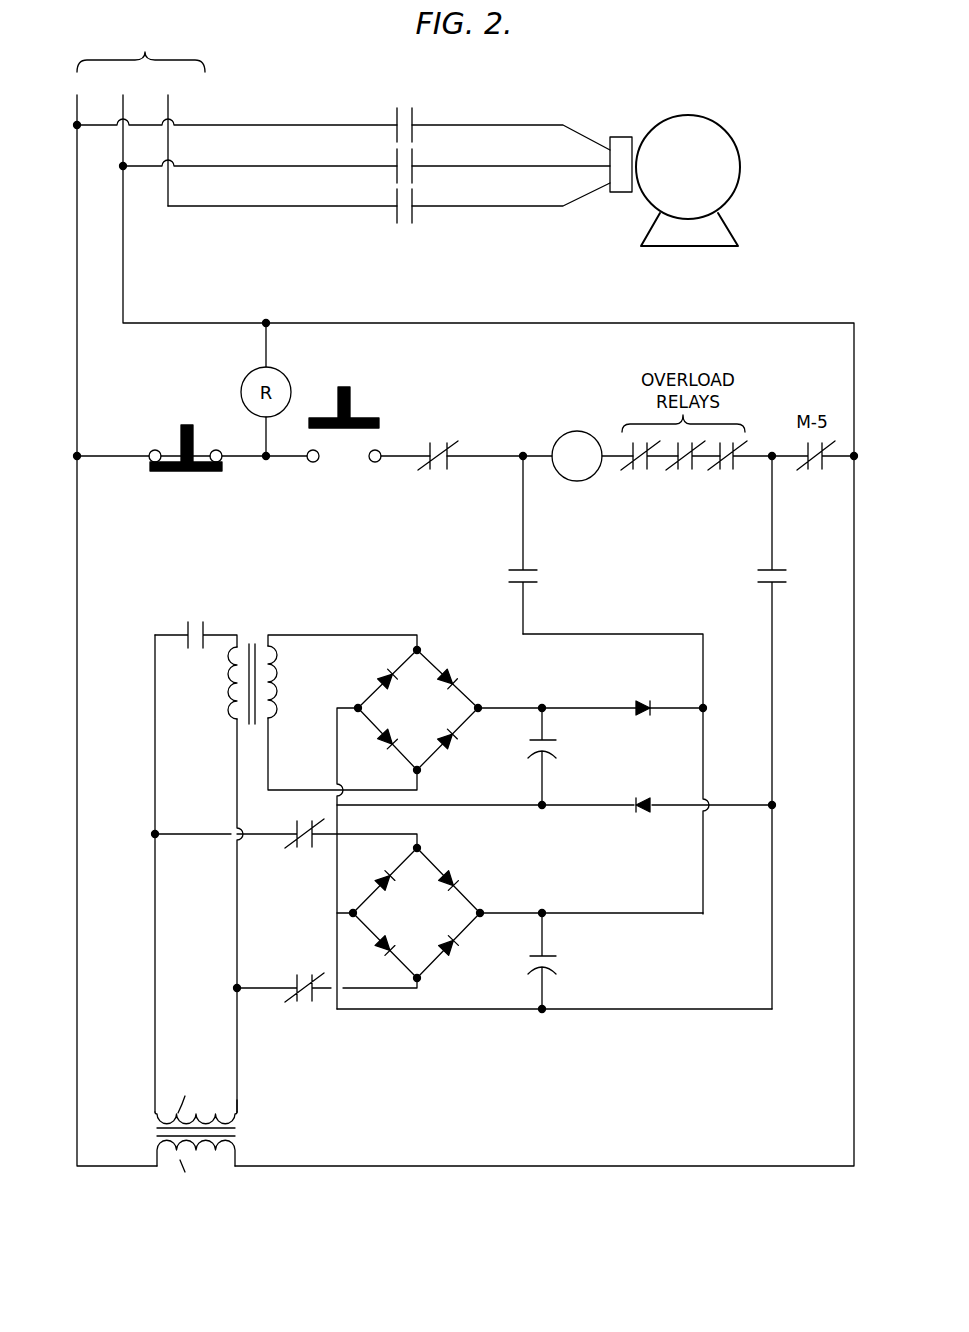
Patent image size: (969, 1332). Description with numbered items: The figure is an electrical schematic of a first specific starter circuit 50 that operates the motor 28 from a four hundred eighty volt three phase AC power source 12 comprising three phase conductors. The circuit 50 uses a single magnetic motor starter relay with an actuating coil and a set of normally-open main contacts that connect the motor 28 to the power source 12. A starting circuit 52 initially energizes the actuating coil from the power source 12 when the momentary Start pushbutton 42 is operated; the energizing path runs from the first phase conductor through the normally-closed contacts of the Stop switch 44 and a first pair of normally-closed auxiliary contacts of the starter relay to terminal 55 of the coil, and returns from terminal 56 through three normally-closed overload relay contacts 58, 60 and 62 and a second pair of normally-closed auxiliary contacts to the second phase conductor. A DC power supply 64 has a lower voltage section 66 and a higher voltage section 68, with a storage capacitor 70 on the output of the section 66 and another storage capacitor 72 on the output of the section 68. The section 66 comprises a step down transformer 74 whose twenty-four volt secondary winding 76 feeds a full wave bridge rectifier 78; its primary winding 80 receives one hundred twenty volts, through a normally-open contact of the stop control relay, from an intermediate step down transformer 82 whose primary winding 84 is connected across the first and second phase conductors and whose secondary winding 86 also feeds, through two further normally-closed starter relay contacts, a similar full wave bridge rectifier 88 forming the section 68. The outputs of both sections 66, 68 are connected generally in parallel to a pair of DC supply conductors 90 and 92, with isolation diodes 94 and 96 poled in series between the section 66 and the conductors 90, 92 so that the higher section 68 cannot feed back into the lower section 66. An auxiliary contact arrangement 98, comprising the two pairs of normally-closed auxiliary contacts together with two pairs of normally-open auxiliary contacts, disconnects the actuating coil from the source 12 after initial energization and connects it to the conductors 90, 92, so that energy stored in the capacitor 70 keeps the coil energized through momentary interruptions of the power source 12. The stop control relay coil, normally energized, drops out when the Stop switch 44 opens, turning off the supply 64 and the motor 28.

The power source 12 is at (207, 65).
The motor 28 is at (727, 134).
The starter circuit 50 is at (690, 66).
The Start pushbutton 42 is at (396, 384).
The Stop switch 44 is at (158, 380).
The starting circuit 52 is at (362, 510).
The terminal 55 is at (537, 452).
The terminal 56 is at (610, 452).
The overload relay contact 58 is at (632, 468).
The overload relay contact 60 is at (678, 468).
The overload relay contact 62 is at (722, 468).
The DC power supply 64 is at (472, 1014).
The lower voltage section 66 is at (516, 664).
The higher voltage section 68 is at (516, 848).
The storage capacitor 70 is at (530, 738).
The storage capacitor 72 is at (548, 970).
The step down transformer 74 is at (245, 600).
The secondary winding 76 is at (273, 660).
The full wave bridge rectifier 78 is at (404, 720).
The primary winding 80 is at (228, 697).
The intermediate step down transformer 82 is at (252, 1130).
The primary winding 84 is at (222, 1155).
The secondary winding 86 is at (221, 1112).
The full wave bridge rectifier 88 is at (404, 923).
The DC supply conductor 90 is at (627, 634).
The DC supply conductor 92 is at (772, 612).
The isolation diode 94 is at (645, 698).
The isolation diode 96 is at (645, 797).
The auxiliary contact arrangement 98 is at (480, 559).